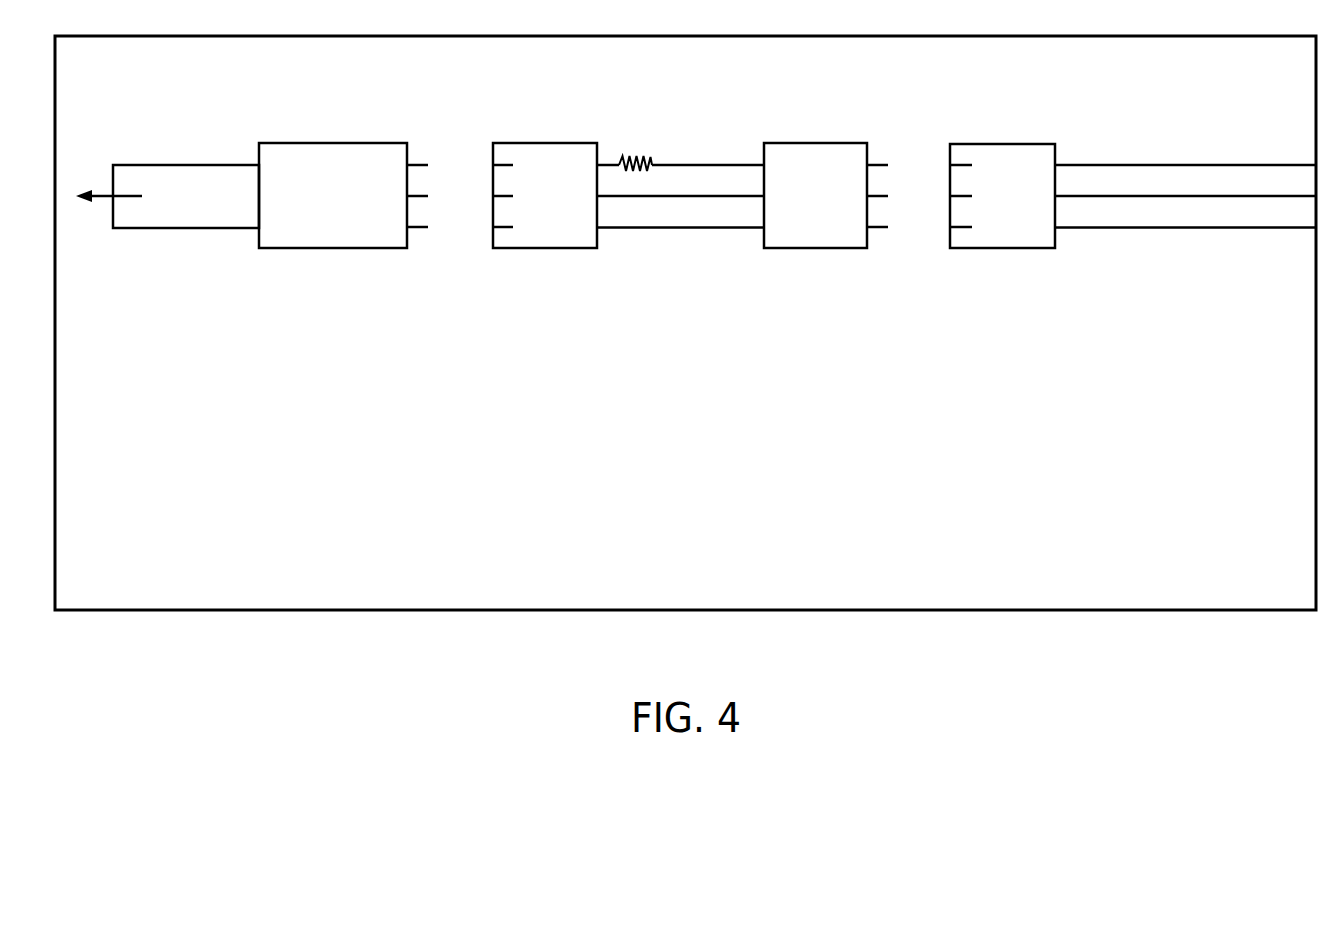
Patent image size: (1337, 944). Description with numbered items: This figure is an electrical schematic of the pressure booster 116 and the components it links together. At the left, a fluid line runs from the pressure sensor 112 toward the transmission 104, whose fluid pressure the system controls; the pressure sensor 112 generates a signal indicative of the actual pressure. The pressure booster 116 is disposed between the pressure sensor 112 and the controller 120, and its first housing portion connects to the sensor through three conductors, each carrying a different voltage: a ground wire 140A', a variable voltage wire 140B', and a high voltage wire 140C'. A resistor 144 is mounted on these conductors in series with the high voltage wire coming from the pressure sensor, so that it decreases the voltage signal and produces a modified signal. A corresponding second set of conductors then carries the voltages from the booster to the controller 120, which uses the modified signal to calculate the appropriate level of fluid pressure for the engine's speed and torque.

The transmission 104 is at (178, 212).
The pressure sensor 112 is at (307, 143).
The pressure booster 116 is at (563, 143).
The resistor 144 is at (638, 160).
The variable voltage wire 140B' is at (680, 130).
The ground wire 140A' is at (680, 239).
The high voltage wire 140C' is at (680, 271).
The controller 120 is at (1033, 144).